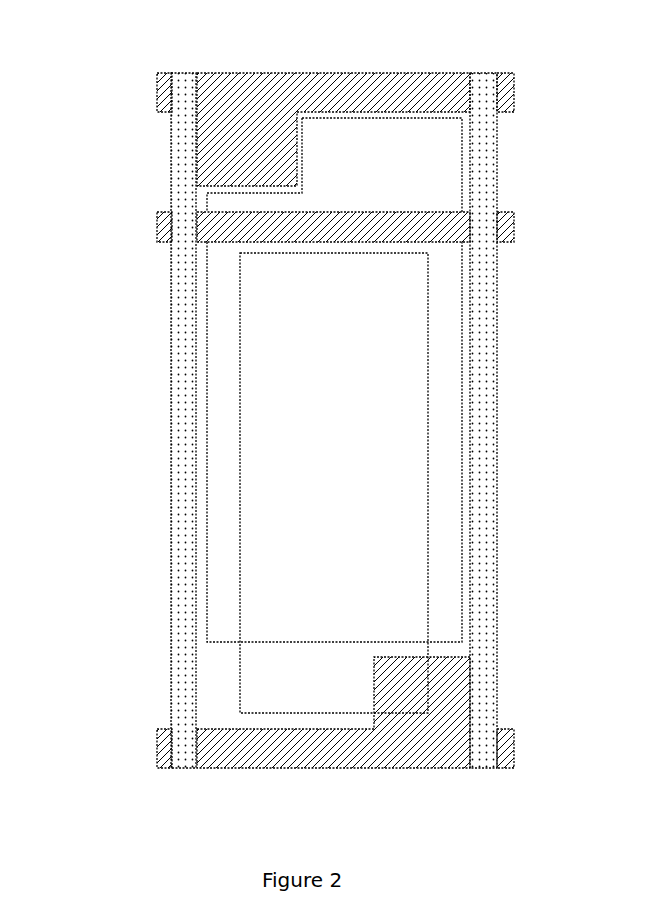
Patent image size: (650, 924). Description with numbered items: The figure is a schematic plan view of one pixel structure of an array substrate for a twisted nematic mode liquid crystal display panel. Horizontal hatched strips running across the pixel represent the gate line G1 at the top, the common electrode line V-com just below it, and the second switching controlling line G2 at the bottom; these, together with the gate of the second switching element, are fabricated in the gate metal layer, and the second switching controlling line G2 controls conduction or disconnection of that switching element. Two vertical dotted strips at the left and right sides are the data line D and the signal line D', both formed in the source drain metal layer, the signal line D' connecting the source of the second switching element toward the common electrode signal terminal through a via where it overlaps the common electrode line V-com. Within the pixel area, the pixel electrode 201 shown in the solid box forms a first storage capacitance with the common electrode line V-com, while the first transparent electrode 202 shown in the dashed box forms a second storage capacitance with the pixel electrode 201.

The gate line G1 is at (403, 80).
The second switching controlling line G2 is at (510, 728).
The data line D is at (144, 420).
The signal line D' is at (527, 420).
The common electrode line V-com is at (157, 220).
The pixel electrode 201 is at (448, 192).
The first transparent electrode 202 is at (247, 663).